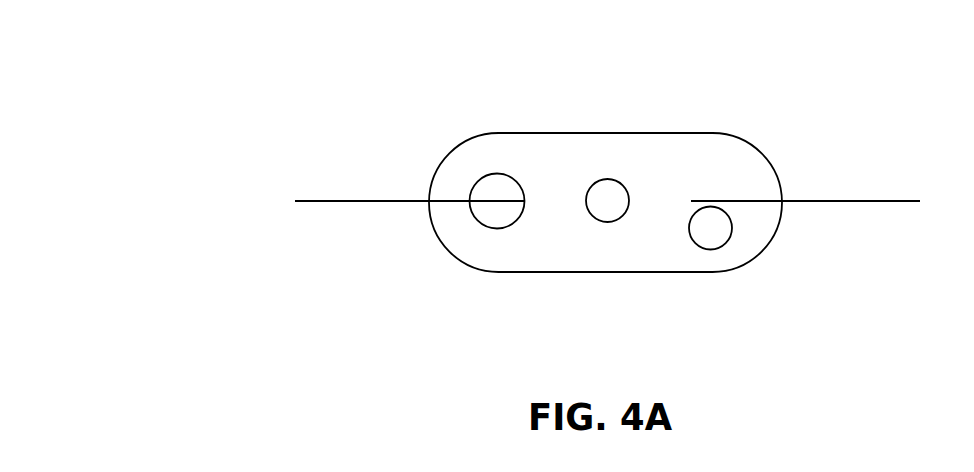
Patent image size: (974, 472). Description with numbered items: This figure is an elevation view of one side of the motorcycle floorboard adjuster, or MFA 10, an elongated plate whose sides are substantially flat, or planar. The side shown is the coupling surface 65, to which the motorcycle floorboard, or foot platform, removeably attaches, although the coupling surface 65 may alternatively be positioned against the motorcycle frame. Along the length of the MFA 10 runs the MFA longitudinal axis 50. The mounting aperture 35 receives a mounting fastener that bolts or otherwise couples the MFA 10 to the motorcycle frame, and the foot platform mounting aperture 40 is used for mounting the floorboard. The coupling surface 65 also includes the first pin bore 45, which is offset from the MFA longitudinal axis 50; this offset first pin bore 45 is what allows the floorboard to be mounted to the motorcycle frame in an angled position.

The motorcycle floorboard adjuster 10 is at (142, 127).
The mounting aperture 35 is at (493, 173).
The foot platform mounting aperture 40 is at (605, 179).
The first pin bore 45 is at (733, 225).
The MFA longitudinal axis 50 is at (840, 198).
The coupling surface 65 is at (576, 258).